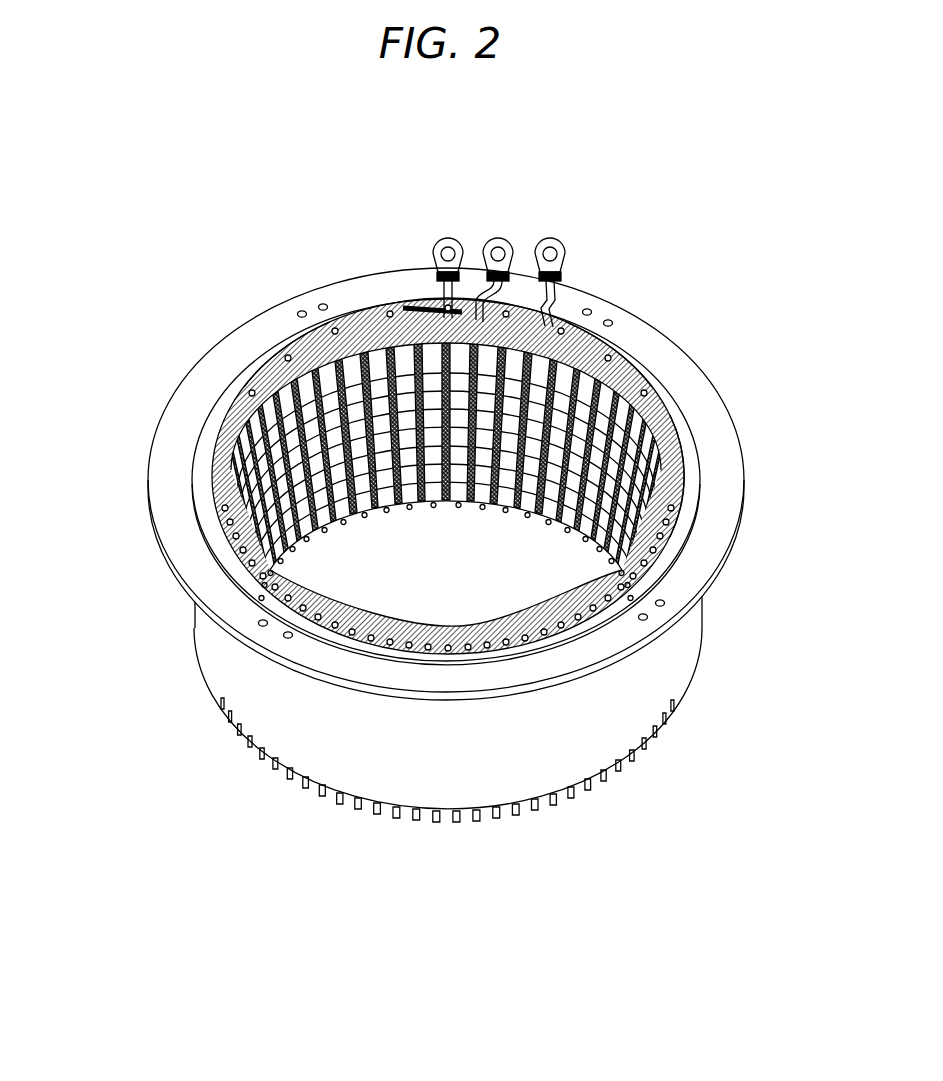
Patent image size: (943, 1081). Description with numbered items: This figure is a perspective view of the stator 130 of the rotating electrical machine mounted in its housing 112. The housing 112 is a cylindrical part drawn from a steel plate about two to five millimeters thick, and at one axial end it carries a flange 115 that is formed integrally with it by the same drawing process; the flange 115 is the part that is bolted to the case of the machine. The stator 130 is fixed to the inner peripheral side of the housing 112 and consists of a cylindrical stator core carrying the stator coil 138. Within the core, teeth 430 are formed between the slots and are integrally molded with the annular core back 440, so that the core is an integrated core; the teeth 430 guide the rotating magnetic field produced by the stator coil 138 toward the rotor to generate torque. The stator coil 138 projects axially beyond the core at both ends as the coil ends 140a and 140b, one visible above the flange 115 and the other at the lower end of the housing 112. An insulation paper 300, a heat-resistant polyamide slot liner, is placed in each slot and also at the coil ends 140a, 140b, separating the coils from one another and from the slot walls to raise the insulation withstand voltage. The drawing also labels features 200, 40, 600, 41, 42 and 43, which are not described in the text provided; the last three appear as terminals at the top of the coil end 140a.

The stator 130 is at (717, 243).
The housing 112 is at (235, 670).
The flange 115 is at (180, 537).
The coil end 140a is at (255, 362).
The coil end 140b is at (423, 822).
The insulation paper 300 is at (435, 295).
The stator coil 200 is at (215, 510).
The teeth 430 is at (398, 350).
The core back 440 is at (203, 488).
The segment conductor 40 is at (333, 345).
The insulating member 600 is at (342, 330).
The stator coil 138 is at (680, 447).
The U-phase terminal 41 is at (444, 240).
The V-phase terminal 42 is at (500, 240).
The W-phase terminal 43 is at (552, 240).